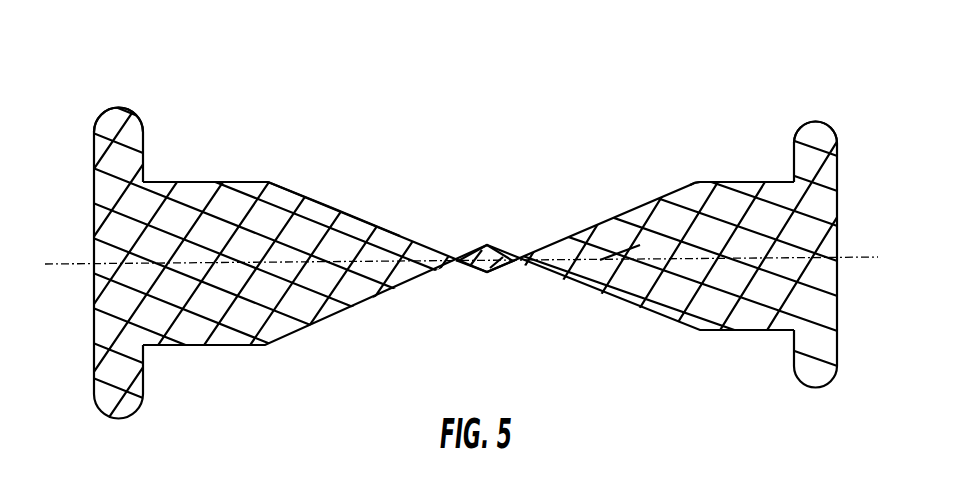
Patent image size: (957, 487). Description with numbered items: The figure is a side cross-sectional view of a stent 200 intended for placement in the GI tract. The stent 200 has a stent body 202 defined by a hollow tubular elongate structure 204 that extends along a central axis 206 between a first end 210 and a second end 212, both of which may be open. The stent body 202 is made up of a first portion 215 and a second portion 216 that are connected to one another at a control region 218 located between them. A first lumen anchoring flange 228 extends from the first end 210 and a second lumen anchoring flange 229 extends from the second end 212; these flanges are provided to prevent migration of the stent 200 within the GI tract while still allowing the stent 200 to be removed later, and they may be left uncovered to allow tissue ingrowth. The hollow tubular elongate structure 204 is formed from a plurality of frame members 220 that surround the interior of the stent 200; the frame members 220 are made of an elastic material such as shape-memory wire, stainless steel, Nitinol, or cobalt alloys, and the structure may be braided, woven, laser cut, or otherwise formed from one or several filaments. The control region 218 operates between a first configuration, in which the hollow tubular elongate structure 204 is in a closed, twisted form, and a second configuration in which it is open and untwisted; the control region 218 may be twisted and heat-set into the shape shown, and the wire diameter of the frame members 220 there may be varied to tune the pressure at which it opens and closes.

The stent 200 is at (237, 66).
The stent body 202 is at (302, 168).
The hollow tubular elongate structure 204 is at (368, 218).
The central axis 206 is at (66, 263).
The first end 210 is at (832, 403).
The second end 212 is at (108, 433).
The first portion 215 is at (717, 170).
The second portion 216 is at (205, 162).
The control region 218 is at (489, 218).
The frame members 220 is at (613, 247).
The first lumen anchoring flange 228 is at (813, 120).
The second lumen anchoring flange 229 is at (112, 108).